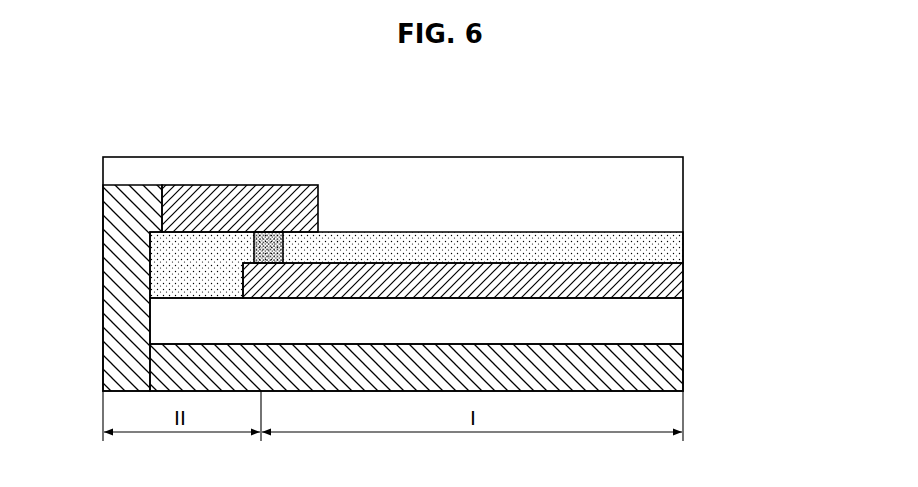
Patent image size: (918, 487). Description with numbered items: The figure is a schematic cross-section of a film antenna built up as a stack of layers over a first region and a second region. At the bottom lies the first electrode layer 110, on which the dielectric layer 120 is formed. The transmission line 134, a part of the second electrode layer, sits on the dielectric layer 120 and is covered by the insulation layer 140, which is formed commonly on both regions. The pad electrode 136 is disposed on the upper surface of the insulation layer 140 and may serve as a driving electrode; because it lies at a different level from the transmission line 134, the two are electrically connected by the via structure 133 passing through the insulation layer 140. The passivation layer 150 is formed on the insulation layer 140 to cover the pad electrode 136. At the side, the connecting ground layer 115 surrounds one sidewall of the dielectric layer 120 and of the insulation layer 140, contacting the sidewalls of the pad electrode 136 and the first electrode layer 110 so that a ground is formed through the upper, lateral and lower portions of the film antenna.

The first electrode layer 110 is at (683, 363).
The connecting ground layer 115 is at (140, 197).
The dielectric layer 120 is at (678, 318).
The via structure 133 is at (270, 200).
The transmission line 134 is at (683, 278).
The pad electrode 136 is at (207, 197).
The insulation layer 140 is at (683, 244).
The passivation layer 150 is at (678, 193).